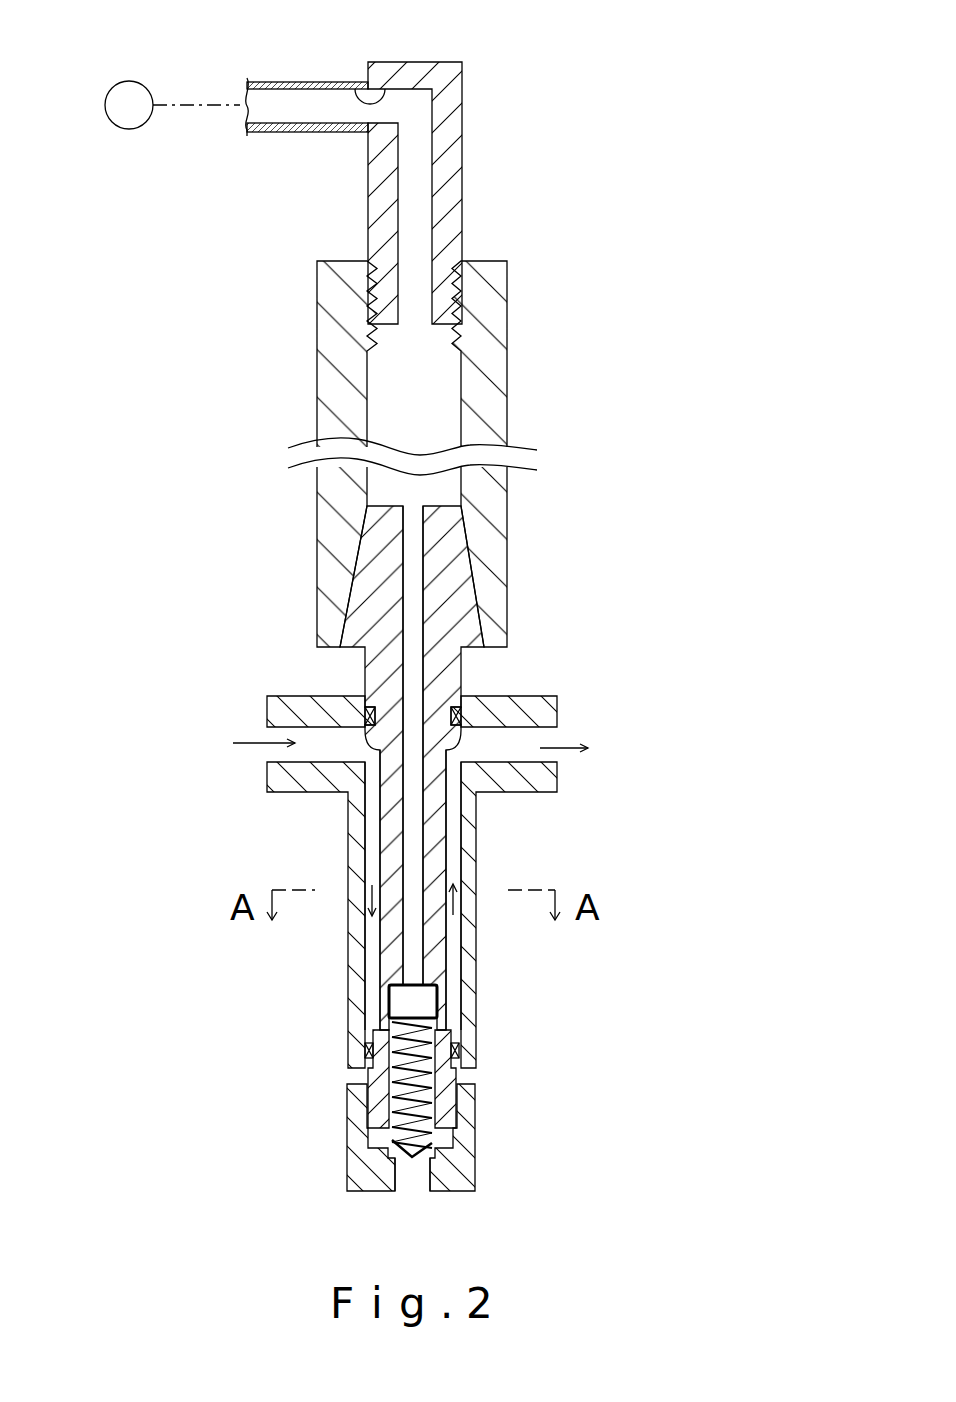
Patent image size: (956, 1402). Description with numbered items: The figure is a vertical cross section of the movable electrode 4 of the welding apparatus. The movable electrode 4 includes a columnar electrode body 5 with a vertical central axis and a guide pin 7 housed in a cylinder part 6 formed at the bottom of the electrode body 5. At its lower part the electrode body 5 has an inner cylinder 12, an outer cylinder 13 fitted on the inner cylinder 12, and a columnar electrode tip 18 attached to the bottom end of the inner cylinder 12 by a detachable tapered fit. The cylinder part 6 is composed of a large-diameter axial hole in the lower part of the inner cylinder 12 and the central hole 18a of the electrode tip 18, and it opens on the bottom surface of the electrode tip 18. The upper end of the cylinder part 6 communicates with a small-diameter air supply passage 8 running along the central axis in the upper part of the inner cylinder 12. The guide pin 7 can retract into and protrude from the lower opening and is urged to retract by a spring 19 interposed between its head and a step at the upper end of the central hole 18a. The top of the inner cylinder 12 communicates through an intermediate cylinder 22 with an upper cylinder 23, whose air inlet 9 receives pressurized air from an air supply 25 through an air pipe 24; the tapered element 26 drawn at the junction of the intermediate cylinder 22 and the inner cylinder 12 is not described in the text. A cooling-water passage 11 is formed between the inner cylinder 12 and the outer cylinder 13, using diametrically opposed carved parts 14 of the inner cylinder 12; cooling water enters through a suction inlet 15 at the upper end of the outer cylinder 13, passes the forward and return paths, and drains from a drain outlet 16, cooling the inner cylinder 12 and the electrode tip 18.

The movable electrode 4 is at (295, 277).
The electrode body 5 is at (507, 617).
The cylinder part 6 is at (428, 1078).
The guide pin 7 is at (400, 1030).
The air supply passage 8 is at (447, 223).
The air inlet 9 is at (357, 95).
The cooling-water passage 11 is at (373, 830).
The inner cylinder 12 is at (440, 850).
The outer cylinder 13 is at (476, 965).
The carved part 14 is at (450, 935).
The suction inlet 15 is at (268, 728).
The drain outlet 16 is at (555, 740).
The electrode tip 18 is at (347, 1177).
The central hole 18a is at (417, 1177).
The spring 19 is at (397, 1110).
The intermediate cylinder 22 is at (318, 383).
The upper cylinder 23 is at (462, 98).
The air pipe 24 is at (298, 80).
The air supply 25 is at (131, 80).
The tapered plug 26 is at (413, 567).